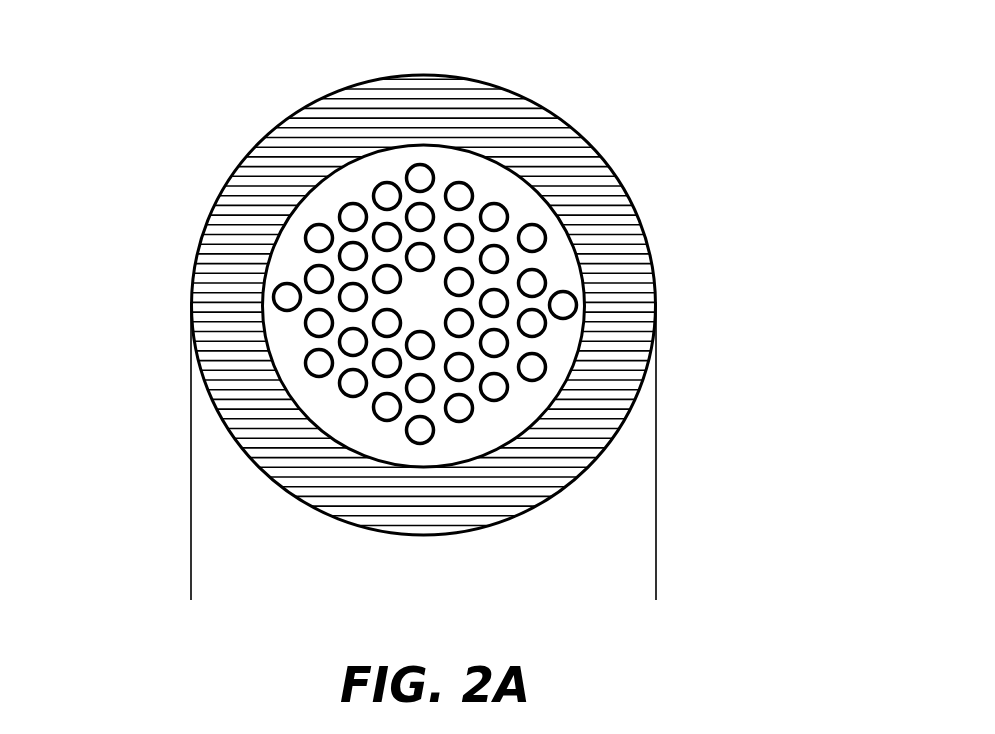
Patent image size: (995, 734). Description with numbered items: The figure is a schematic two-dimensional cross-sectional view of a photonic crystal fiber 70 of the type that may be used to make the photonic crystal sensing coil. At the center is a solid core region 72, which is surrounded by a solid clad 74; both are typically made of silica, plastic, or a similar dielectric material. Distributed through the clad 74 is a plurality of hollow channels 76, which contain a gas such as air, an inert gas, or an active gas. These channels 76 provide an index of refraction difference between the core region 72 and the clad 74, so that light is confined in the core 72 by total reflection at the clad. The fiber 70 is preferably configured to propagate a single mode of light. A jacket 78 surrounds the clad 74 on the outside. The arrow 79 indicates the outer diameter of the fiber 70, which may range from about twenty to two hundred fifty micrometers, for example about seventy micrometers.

The photonic crystal fiber 70 is at (387, 277).
The solid core region 72 is at (502, 229).
The solid clad 74 is at (282, 255).
The hollow channels 76 is at (502, 262).
The jacket 78 is at (548, 497).
The arrow indicating outer diameter 79 is at (656, 586).